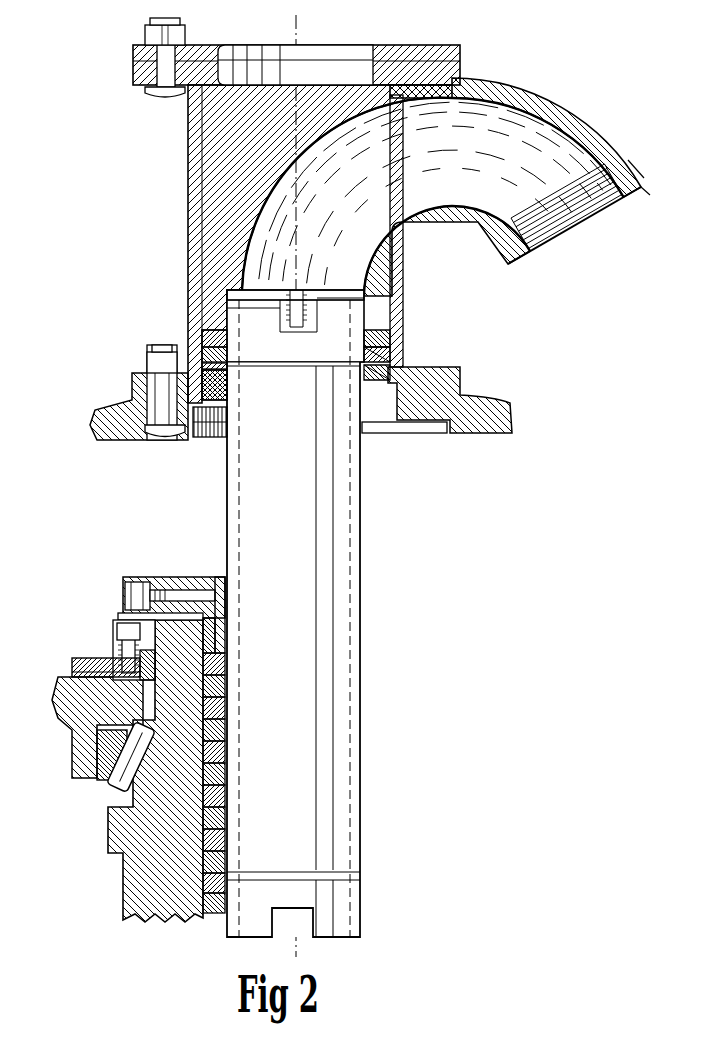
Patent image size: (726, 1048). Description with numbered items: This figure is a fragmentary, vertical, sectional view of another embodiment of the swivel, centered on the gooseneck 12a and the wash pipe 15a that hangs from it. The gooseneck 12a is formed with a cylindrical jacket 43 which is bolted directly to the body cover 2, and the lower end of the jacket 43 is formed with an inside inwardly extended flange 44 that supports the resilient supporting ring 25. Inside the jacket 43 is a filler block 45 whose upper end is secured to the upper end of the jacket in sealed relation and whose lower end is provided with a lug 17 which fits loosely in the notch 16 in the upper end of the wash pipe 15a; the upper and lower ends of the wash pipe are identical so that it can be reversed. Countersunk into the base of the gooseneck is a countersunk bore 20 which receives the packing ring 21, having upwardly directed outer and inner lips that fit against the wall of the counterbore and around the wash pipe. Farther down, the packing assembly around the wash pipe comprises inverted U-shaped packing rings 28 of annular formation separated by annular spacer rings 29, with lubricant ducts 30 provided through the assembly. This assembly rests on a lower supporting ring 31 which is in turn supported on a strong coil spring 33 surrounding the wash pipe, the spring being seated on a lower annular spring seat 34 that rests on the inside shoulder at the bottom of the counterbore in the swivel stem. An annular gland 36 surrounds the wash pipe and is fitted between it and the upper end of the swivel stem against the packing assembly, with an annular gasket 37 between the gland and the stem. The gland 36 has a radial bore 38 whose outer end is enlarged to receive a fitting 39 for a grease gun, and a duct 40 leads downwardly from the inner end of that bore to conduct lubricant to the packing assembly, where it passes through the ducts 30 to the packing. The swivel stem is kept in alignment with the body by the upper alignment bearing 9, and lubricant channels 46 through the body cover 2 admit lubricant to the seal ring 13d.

The body cover 2 is at (497, 412).
The upper alignment bearing 9 is at (105, 780).
The gooseneck 12a is at (517, 84).
The seal ring 13d is at (122, 670).
The wash pipe 15a is at (362, 531).
The notch 16 is at (210, 320).
The lug 17 is at (222, 296).
The countersunk bore 20 is at (388, 338).
The packing ring 21 is at (388, 348).
The resilient supporting ring 25 is at (388, 364).
The inverted U-shaped packing ring 28 is at (227, 712).
The annular spacer ring 29 is at (227, 695).
The lubricant duct 30 is at (228, 673).
The lower supporting ring 31 is at (213, 785).
The coil spring 33 is at (207, 893).
The lower annular spring seat 34 is at (213, 914).
The annular gland 36 is at (183, 576).
The annular gasket 37 is at (118, 617).
The radial bore 38 is at (210, 576).
The fitting 39 is at (125, 589).
The duct 40 is at (227, 625).
The cylindrical jacket 43 is at (190, 222).
The inside inwardly extended flange 44 is at (388, 402).
The filler block 45 is at (208, 133).
The lubricant channel 46 is at (73, 670).